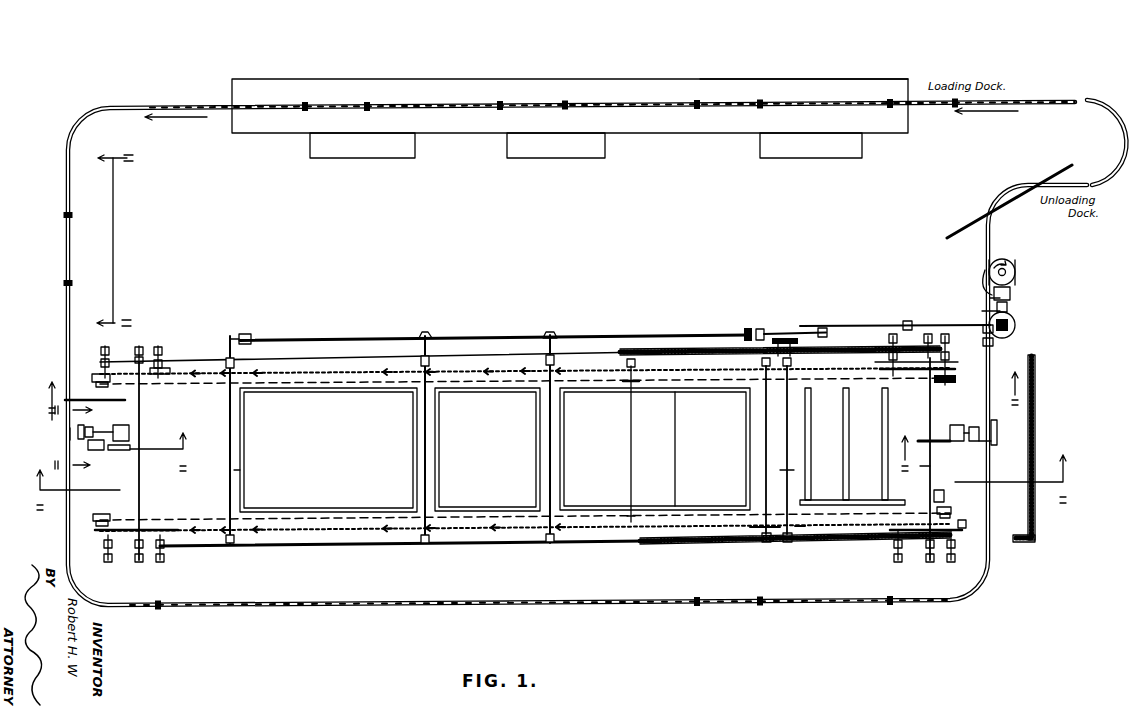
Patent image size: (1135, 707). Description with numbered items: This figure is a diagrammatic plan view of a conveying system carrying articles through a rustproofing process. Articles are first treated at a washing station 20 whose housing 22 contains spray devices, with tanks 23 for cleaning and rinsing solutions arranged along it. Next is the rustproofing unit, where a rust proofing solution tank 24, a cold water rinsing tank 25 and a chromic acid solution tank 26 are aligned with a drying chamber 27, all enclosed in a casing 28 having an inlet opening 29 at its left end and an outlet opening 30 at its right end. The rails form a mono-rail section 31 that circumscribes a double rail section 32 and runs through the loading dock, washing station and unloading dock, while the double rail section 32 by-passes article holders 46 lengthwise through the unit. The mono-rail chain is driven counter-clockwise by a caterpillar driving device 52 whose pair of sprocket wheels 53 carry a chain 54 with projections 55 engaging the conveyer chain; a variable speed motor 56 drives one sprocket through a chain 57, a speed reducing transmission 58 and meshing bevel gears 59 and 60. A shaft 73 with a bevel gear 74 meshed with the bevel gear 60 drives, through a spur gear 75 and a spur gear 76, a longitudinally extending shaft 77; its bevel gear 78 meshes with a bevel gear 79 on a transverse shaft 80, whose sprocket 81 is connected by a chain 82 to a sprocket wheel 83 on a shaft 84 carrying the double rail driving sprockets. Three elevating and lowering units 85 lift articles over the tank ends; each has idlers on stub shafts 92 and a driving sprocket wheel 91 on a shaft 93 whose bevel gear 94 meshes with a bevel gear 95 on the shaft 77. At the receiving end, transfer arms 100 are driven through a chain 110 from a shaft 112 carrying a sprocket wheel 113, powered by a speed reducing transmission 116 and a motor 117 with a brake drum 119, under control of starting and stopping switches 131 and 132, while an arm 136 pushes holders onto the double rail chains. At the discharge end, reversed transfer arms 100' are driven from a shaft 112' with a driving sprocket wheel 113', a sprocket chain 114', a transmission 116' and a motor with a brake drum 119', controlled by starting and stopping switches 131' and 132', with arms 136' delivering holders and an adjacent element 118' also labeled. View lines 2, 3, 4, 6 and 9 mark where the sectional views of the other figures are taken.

The washing station 20 is at (656, 79).
The housing 22 is at (752, 79).
The tanks 23 is at (366, 158).
The rust proofing solution tank 24 is at (240, 488).
The cold water rinsing tank 25 is at (487, 449).
The chromic acid solution tank 26 is at (655, 449).
The drying chamber 27 is at (886, 426).
The casing 28 is at (492, 338).
The inlet opening 29 is at (152, 497).
The outlet opening 30 is at (1010, 542).
The mono-rail section 31 is at (171, 99).
The double rail section 32 is at (336, 379).
The article holder 46 is at (1051, 170).
The caterpillar driving device 52 is at (1020, 280).
The sprocket wheels 53 is at (1010, 262).
The chain 54 is at (1012, 291).
The projections 55 is at (1010, 306).
The variable speed motor 56 is at (990, 286).
The chain 57 is at (990, 299).
The speed reducing transmission 58 is at (986, 311).
The bevel gear 59 is at (988, 332).
The bevel gear 60 is at (990, 342).
The shaft 73 is at (895, 325).
The bevel gear 74 is at (1016, 326).
The spur gear 75 is at (749, 327).
The spur gear 76 is at (745, 350).
The longitudinally extending shaft 77 is at (678, 335).
The bevel gear 78 is at (803, 333).
The bevel gear 79 is at (790, 346).
The shaft 80 is at (787, 428).
The sprocket 81 is at (800, 527).
The chain 82 is at (792, 542).
The sprocket wheel 83 is at (750, 527).
The shaft 84 is at (787, 470).
The elevating and lowering units 85 is at (210, 543).
The driving sprocket wheel 91 is at (226, 376).
The stub shafts 92 is at (228, 361).
The shaft 93 is at (240, 458).
The bevel gear 94 is at (230, 338).
The bevel gear 95 is at (246, 334).
The transfer arms 100 is at (119, 457).
The chain 110 is at (143, 350).
The shaft 112 is at (153, 462).
The sprocket wheel 113 is at (136, 439).
The speed reducing transmission 116 is at (133, 427).
The motor 117 is at (96, 452).
The brake drum 119 is at (56, 437).
The starting switch 131 is at (71, 445).
The stopping switch 132 is at (176, 353).
The arm 136 is at (90, 440).
The transfer arms 100' is at (906, 448).
The shaft 112' is at (950, 460).
The driving sprocket wheel 113' is at (905, 474).
The sprocket chain 114' is at (949, 453).
The speed reducing transmission 116' is at (960, 414).
The pivot 118' is at (1000, 435).
The brake drum 119' is at (1026, 429).
The starting switch 131' is at (972, 421).
The stopping switch 132' is at (954, 491).
The arms 136' is at (955, 454).
The section line 2 is at (553, 482).
The section line 3 is at (106, 241).
The section line 4 is at (109, 426).
The section line 6 is at (90, 437).
The section line 9 is at (959, 410).